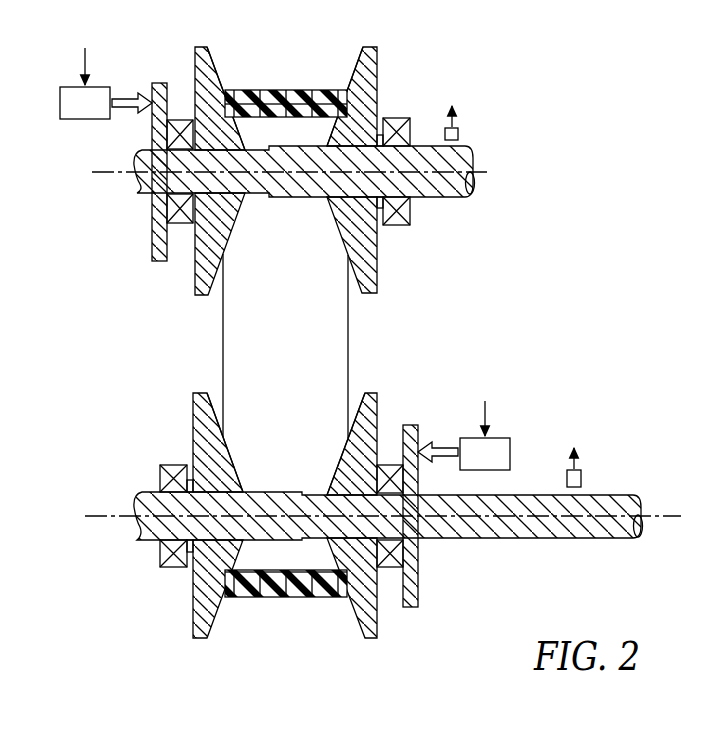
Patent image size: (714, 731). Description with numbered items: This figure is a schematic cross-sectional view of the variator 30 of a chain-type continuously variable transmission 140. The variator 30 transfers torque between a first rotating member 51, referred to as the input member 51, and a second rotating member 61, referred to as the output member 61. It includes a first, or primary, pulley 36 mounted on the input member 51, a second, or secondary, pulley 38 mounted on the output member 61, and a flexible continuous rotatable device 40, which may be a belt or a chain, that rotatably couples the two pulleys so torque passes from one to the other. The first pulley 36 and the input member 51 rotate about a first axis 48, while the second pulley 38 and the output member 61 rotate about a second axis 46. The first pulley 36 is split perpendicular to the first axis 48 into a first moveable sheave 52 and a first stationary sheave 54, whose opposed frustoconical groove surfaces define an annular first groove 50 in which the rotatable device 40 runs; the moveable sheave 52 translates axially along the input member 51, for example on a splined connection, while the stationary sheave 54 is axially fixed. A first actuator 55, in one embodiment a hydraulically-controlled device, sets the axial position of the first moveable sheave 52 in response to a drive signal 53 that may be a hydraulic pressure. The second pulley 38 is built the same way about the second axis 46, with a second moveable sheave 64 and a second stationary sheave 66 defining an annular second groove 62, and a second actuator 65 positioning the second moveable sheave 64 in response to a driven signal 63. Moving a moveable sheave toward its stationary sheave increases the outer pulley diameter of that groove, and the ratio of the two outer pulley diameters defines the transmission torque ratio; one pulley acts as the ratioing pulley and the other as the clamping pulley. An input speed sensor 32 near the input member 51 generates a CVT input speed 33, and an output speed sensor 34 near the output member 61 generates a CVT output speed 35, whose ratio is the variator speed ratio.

The variator 30 is at (287, 503).
The input speed sensor 32 is at (458, 134).
The CVT input speed 33 is at (441, 122).
The output speed sensor 34 is at (581, 480).
The CVT output speed 35 is at (565, 469).
The first pulley 36 is at (307, 158).
The second pulley 38 is at (308, 503).
The flexible continuous rotatable device 40 is at (350, 327).
The second axis 46 is at (110, 518).
The first axis 48 is at (92, 172).
The annular first groove 50 is at (325, 89).
The first rotating member 51 is at (443, 197).
The first moveable sheave 52 is at (199, 68).
The drive signal 53 is at (98, 46).
The first stationary sheave 54 is at (380, 70).
The first actuator 55 is at (98, 114).
The second rotating member 61 is at (463, 540).
The annular second groove 62 is at (278, 605).
The driven signal 63 is at (498, 399).
The second moveable sheave 64 is at (378, 410).
The second actuator 65 is at (498, 465).
The second stationary sheave 66 is at (193, 412).
The continuously variable transmission 140 is at (124, 654).